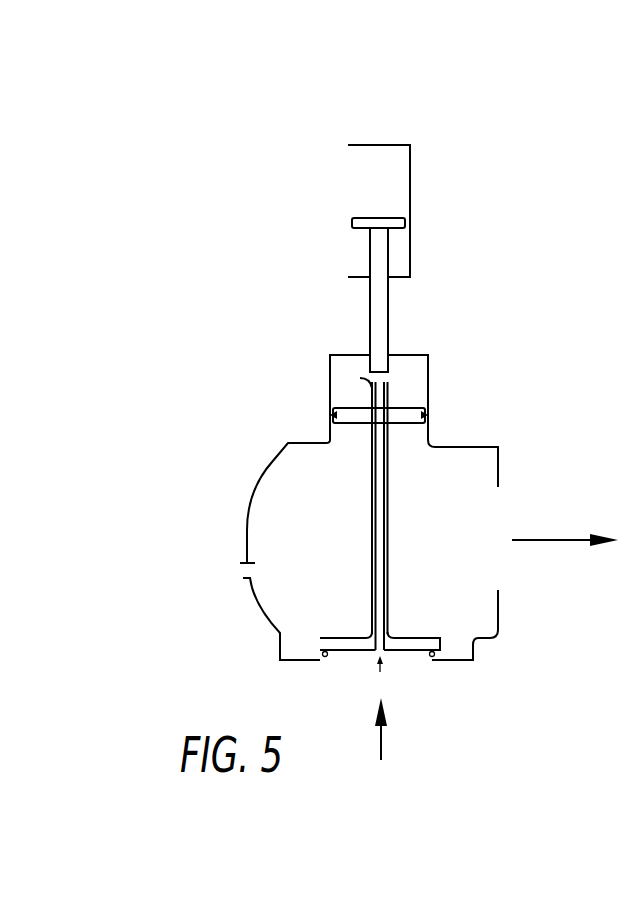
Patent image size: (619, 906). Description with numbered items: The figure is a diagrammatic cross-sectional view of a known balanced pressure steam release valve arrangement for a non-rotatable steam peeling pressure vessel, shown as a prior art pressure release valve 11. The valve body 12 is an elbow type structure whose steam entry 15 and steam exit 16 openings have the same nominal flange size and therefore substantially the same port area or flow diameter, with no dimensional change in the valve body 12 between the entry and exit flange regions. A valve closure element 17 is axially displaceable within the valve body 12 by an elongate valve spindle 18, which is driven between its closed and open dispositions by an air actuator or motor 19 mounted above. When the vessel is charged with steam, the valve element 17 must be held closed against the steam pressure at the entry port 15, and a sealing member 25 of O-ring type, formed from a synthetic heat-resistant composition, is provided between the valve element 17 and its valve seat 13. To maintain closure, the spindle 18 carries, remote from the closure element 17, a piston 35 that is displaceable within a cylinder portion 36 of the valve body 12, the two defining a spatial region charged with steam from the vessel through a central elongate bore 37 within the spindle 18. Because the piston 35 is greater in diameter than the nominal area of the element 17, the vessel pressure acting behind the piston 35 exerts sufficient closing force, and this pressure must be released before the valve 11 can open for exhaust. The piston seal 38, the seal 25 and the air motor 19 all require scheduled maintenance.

The pressure release valve 11 is at (231, 582).
The valve body 12 is at (247, 533).
The valve seat 13 is at (432, 661).
The steam entry opening 15 is at (382, 743).
The steam exit opening 16 is at (558, 543).
The valve closure element 17 is at (412, 645).
The valve spindle 18 is at (388, 540).
The air actuator or motor 19 is at (410, 193).
The sealing member 25 is at (327, 657).
The piston 35 is at (407, 420).
The cylinder portion 36 is at (328, 392).
The central elongate bore 37 is at (374, 517).
The piston seal 38 is at (425, 415).